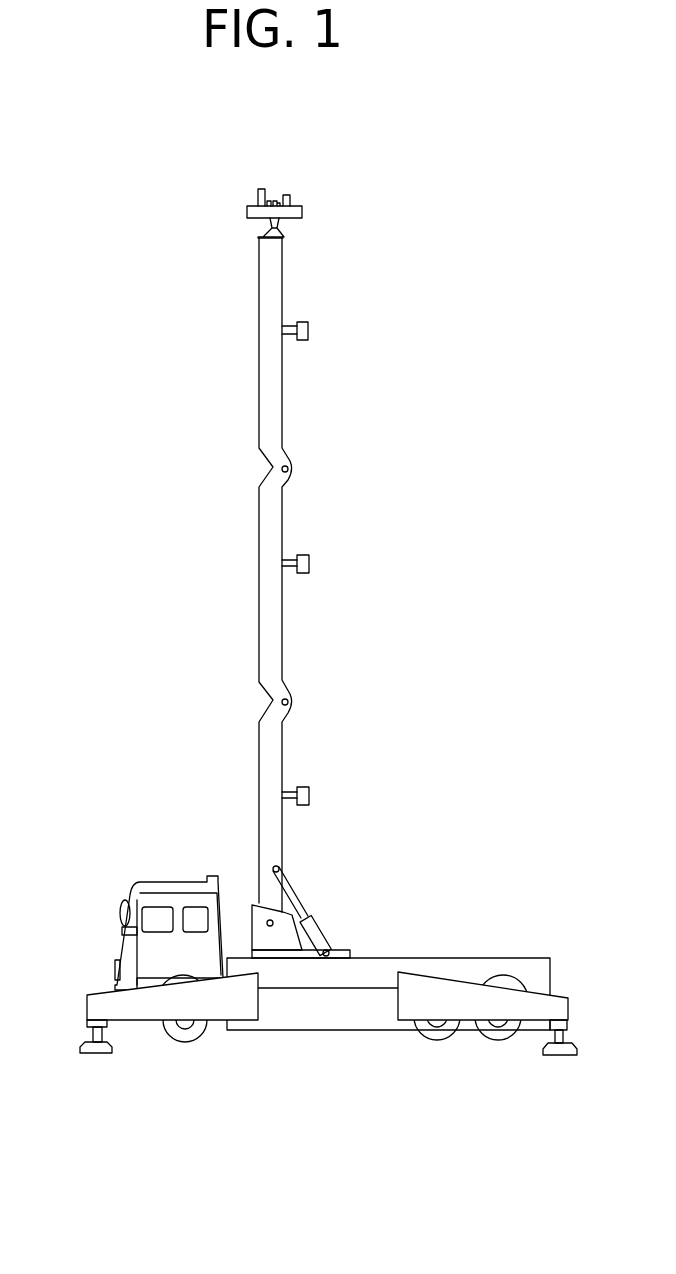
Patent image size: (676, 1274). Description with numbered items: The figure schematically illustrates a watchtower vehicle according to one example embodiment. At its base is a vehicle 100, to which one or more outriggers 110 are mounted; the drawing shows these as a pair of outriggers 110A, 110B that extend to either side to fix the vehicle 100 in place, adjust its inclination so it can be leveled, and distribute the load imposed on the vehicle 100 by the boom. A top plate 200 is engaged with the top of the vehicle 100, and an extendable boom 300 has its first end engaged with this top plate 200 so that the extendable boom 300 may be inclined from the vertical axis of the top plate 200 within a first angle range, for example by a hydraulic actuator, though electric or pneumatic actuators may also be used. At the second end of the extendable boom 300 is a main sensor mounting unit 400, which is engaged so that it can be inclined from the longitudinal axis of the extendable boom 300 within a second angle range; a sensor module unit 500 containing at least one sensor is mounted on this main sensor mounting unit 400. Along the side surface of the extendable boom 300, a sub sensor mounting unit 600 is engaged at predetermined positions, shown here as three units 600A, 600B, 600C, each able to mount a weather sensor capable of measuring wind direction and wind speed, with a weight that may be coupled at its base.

The vehicle 100 is at (122, 950).
The outriggers 110 is at (328, 1059).
The first outrigger 110A is at (217, 1013).
The second outrigger 110B is at (477, 1030).
The top plate 200 is at (350, 956).
The extendable boom 300 is at (268, 614).
The main sensor mounting unit 400 is at (302, 212).
The sensor module unit 500 is at (288, 184).
The sub sensor mounting unit 600 is at (385, 563).
The first sensor unit 600A is at (310, 331).
The second sensor unit 600B is at (311, 564).
The third sensor unit 600C is at (347, 795).